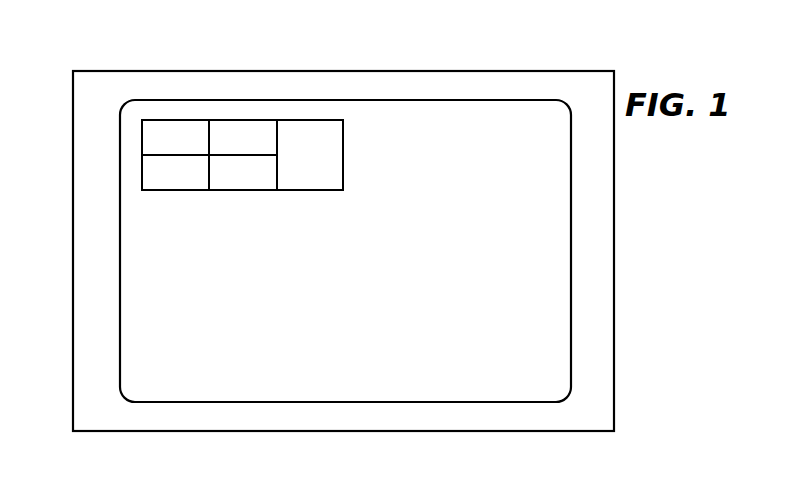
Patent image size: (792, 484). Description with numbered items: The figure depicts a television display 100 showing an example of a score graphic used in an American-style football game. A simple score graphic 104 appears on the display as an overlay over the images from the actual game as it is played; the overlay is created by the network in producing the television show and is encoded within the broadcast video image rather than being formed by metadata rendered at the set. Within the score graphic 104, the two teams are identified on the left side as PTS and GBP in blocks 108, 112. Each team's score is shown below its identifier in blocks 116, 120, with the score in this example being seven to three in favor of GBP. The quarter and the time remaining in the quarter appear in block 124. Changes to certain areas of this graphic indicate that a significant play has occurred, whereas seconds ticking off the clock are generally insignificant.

The television display 100 is at (614, 250).
The score graphic 104 is at (363, 160).
The block 108 is at (175, 120).
The block 112 is at (244, 120).
The block 116 is at (175, 190).
The block 120 is at (243, 190).
The block 124 is at (328, 120).